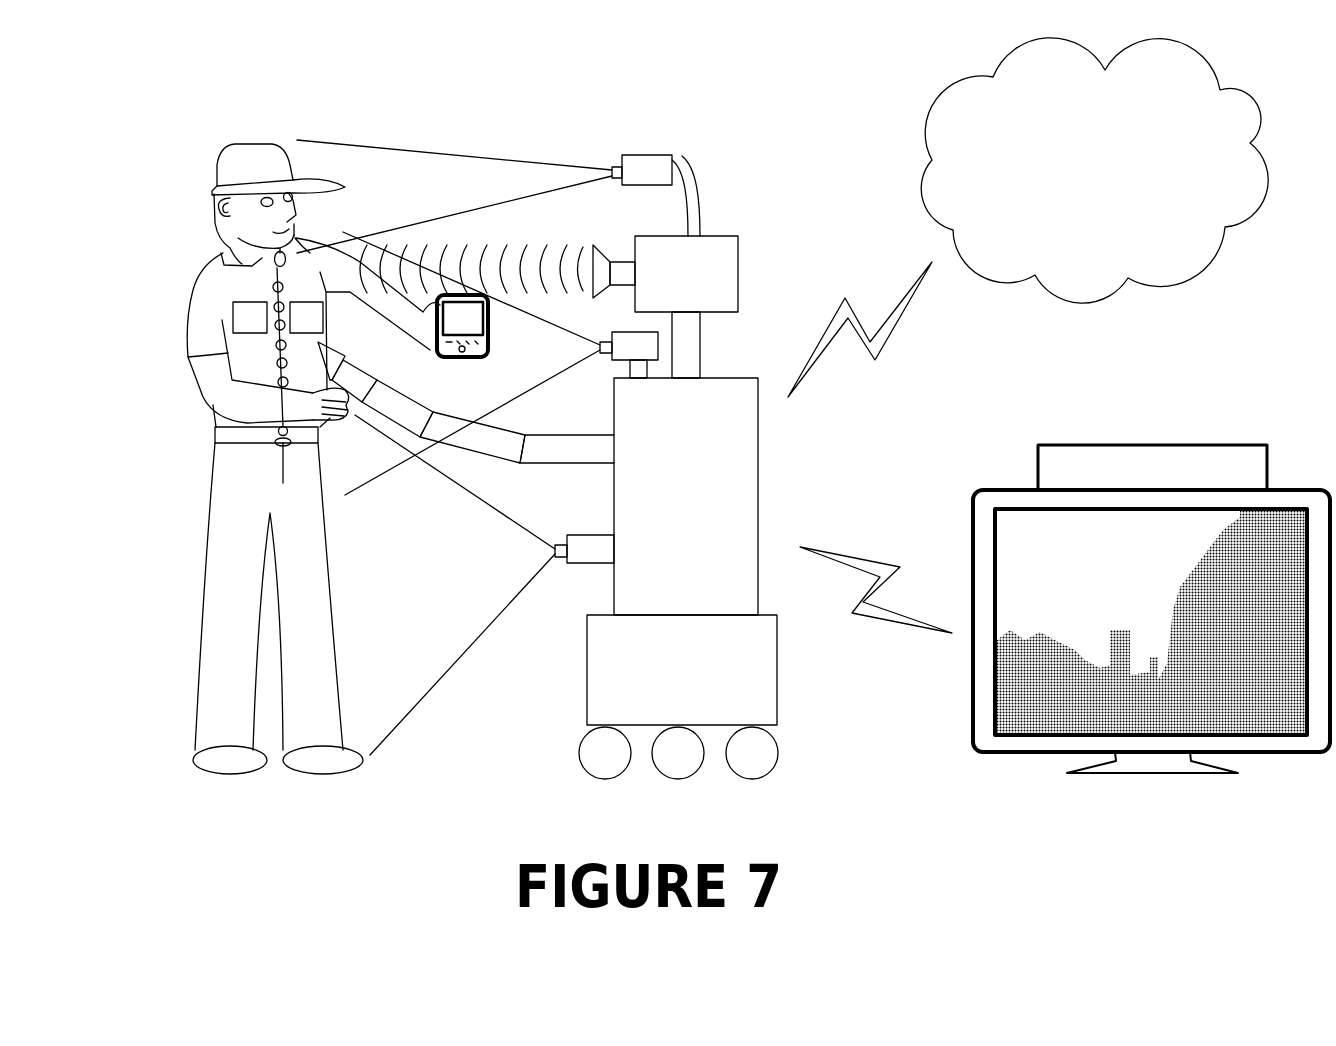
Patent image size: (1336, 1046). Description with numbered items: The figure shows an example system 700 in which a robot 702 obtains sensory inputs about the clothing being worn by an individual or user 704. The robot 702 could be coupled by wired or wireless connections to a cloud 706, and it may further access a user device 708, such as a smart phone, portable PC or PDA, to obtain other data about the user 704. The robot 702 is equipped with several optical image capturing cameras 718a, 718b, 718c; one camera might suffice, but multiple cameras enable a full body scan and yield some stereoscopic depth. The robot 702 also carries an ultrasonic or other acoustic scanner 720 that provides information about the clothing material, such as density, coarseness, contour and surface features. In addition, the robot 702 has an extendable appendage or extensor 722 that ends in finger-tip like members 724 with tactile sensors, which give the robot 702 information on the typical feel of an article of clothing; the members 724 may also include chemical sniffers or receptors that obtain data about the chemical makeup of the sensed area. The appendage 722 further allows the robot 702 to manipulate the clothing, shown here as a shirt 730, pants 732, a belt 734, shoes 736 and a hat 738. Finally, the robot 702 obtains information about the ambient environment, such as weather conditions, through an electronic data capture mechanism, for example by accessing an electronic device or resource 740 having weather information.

The system 700 is at (752, 95).
The robot 702 is at (758, 464).
The user 704 is at (190, 232).
The cloud 706 is at (1094, 170).
The user device 708 is at (490, 318).
The optical image capturing camera 718a is at (578, 565).
The optical image capturing camera 718b is at (660, 337).
The optical image capturing camera 718c is at (655, 155).
The ultrasonic or acoustic scanner 720 is at (598, 218).
The extendable appendage 722 is at (533, 464).
The finger-tip like members 724 is at (378, 328).
The shirt 730 is at (200, 302).
The pants 732 is at (205, 603).
The belt 734 is at (207, 430).
The shoes 736 is at (215, 760).
The hat 738 is at (215, 167).
The electronic device or resource 740 is at (972, 688).